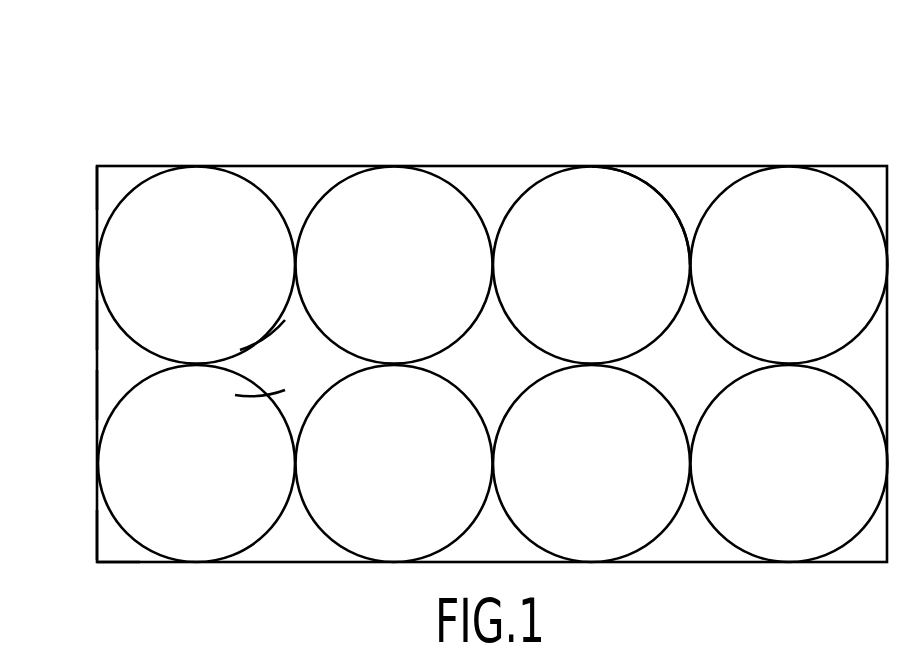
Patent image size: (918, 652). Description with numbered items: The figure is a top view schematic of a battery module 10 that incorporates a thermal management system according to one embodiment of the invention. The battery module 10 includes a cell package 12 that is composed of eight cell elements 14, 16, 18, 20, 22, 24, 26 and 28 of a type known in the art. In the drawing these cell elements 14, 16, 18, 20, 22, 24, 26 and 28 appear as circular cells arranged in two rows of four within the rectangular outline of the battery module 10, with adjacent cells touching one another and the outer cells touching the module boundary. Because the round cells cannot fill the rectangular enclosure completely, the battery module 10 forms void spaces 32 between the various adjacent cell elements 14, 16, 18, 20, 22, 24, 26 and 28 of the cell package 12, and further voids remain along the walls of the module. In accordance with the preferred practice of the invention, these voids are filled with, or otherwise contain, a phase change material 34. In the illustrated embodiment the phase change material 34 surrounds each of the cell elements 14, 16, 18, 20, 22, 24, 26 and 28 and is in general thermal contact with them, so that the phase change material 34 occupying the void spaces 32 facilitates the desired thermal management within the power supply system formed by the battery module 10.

The battery module 10 is at (765, 100).
The cell package 12 is at (667, 202).
The cell element 14 is at (211, 279).
The cell element 16 is at (407, 279).
The cell element 18 is at (604, 279).
The cell element 20 is at (799, 279).
The cell element 22 is at (211, 476).
The cell element 24 is at (407, 476).
The cell element 26 is at (604, 476).
The cell element 28 is at (799, 476).
The void spaces 32 is at (107, 381).
The phase change material 34 is at (113, 188).